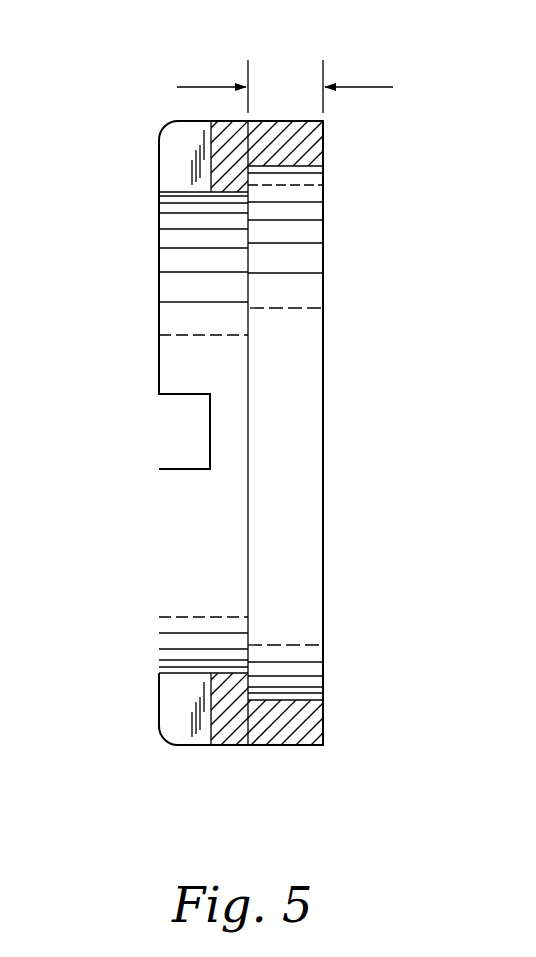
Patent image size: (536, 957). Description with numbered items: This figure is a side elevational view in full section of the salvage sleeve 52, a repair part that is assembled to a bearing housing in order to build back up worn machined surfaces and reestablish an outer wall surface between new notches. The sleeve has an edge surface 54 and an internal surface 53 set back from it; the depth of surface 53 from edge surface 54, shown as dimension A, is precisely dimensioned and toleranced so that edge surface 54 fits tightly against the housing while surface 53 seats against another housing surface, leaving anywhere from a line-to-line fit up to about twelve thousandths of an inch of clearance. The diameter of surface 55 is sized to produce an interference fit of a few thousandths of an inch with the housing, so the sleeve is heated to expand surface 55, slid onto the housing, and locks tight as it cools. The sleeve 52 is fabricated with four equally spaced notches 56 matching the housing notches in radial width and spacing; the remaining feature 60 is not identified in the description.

The salvage sleeve 52 is at (412, 116).
The surface 53 is at (250, 183).
The edge surface 54 is at (323, 135).
The surface 55 is at (292, 167).
The notches 56 is at (172, 158).
The outer wall 60 is at (158, 573).